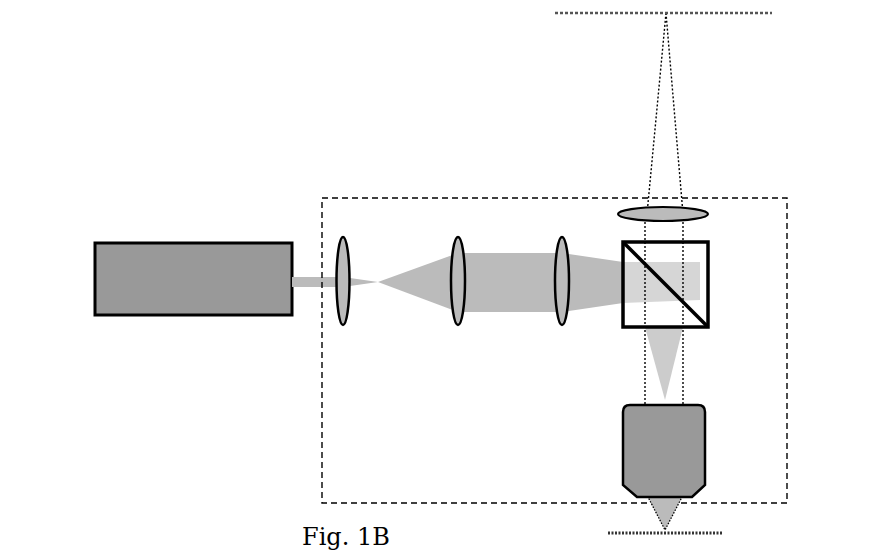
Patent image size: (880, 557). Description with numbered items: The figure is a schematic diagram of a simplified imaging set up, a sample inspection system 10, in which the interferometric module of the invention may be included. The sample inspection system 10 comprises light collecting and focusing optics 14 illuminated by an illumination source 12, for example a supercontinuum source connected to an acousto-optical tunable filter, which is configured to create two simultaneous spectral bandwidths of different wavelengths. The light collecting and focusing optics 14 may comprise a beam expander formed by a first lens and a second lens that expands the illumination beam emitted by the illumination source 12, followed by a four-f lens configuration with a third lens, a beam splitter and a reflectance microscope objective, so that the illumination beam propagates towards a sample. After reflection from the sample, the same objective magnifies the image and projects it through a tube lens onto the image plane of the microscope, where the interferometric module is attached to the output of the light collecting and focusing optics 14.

The sample inspection system 10 is at (159, 74).
The illumination source 12 is at (98, 269).
The light collecting and focusing optics 14 is at (424, 192).